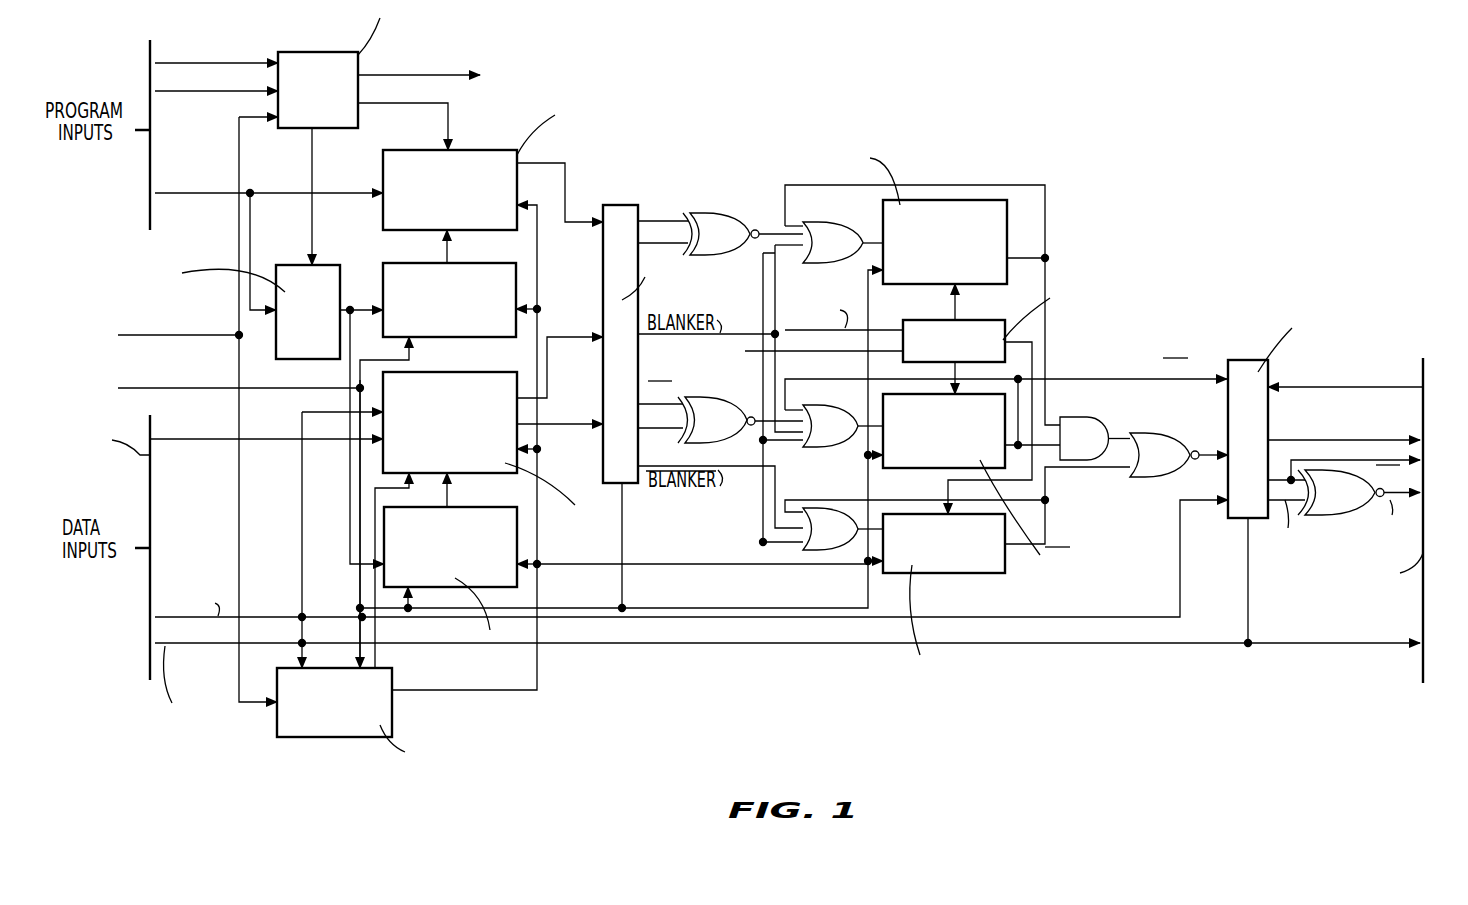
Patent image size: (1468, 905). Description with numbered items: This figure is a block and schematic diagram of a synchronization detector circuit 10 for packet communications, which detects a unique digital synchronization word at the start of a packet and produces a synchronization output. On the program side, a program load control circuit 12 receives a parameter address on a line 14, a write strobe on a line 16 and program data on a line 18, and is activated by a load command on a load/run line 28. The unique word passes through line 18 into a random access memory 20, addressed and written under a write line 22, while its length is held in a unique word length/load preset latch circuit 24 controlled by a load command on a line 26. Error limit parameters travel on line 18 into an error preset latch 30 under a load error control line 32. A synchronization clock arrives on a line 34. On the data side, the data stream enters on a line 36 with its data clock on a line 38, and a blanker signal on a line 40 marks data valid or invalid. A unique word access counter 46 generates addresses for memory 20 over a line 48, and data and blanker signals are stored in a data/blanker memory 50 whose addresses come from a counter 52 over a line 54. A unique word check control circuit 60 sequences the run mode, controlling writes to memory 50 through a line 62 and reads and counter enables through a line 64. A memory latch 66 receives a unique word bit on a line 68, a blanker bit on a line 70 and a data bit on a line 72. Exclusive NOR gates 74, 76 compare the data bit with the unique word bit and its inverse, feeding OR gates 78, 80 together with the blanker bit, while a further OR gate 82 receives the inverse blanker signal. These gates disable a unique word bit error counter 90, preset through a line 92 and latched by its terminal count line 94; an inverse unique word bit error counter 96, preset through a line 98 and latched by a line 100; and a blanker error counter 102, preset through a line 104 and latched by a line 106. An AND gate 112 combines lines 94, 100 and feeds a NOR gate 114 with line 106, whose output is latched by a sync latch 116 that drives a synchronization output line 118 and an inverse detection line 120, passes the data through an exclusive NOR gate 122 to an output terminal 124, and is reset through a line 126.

The synchronization detector circuit 10 is at (742, 86).
The program load control circuit 12 is at (346, 60).
The address line 14 is at (245, 62).
The write strobe line 16 is at (212, 95).
The program data line 18 is at (222, 195).
The random access memory 20 is at (488, 150).
The write line 22 is at (458, 122).
The unique word length/load preset latch circuit 24 is at (283, 268).
The load command line 26 is at (314, 224).
The load/run line 28 is at (210, 338).
The error preset latch 30 is at (998, 328).
The load error control line 32 is at (432, 74).
The synchronization clock line 34 is at (206, 391).
The data input line 36 is at (270, 617).
The data clock line 38 is at (214, 647).
The blanker signal line 40 is at (205, 443).
The unique word access counter 46 is at (470, 330).
The address line 48 is at (445, 255).
The data/blanker memory 50 is at (458, 442).
The counter 52 is at (470, 567).
The address line 54 is at (452, 500).
The unique word check control circuit 60 is at (352, 735).
The write control line 62 is at (374, 492).
The read/enable control line 64 is at (478, 693).
The memory latch 66 is at (625, 212).
The unique word bit line 68 is at (568, 190).
The blanker bit line 70 is at (547, 388).
The data bit line 72 is at (560, 428).
The exclusive NOR gate 74 is at (722, 222).
The exclusive NOR gate 76 is at (722, 408).
The OR gate 78 is at (830, 238).
The OR gate 80 is at (826, 432).
The OR gate 82 is at (826, 542).
The unique word bit error counter 90 is at (978, 203).
The preset line 92 is at (962, 306).
The terminal count line 94 is at (1047, 192).
The inverse unique word bit error counter 96 is at (893, 466).
The preset line 98 is at (958, 372).
The terminal count line 100 is at (846, 383).
The blanker error counter 102 is at (975, 572).
The preset line 104 is at (1035, 483).
The terminal count line 106 is at (1047, 527).
The AND gate 112 is at (1072, 425).
The NOR gate 114 is at (1152, 465).
The sync latch 116 is at (1252, 362).
The synchronization output line 118 is at (1288, 437).
The inverse detection output line 120 is at (1325, 460).
The exclusive NOR gate 122 is at (1335, 505).
The output terminal 124 is at (1412, 491).
The reset line 126 is at (1320, 385).